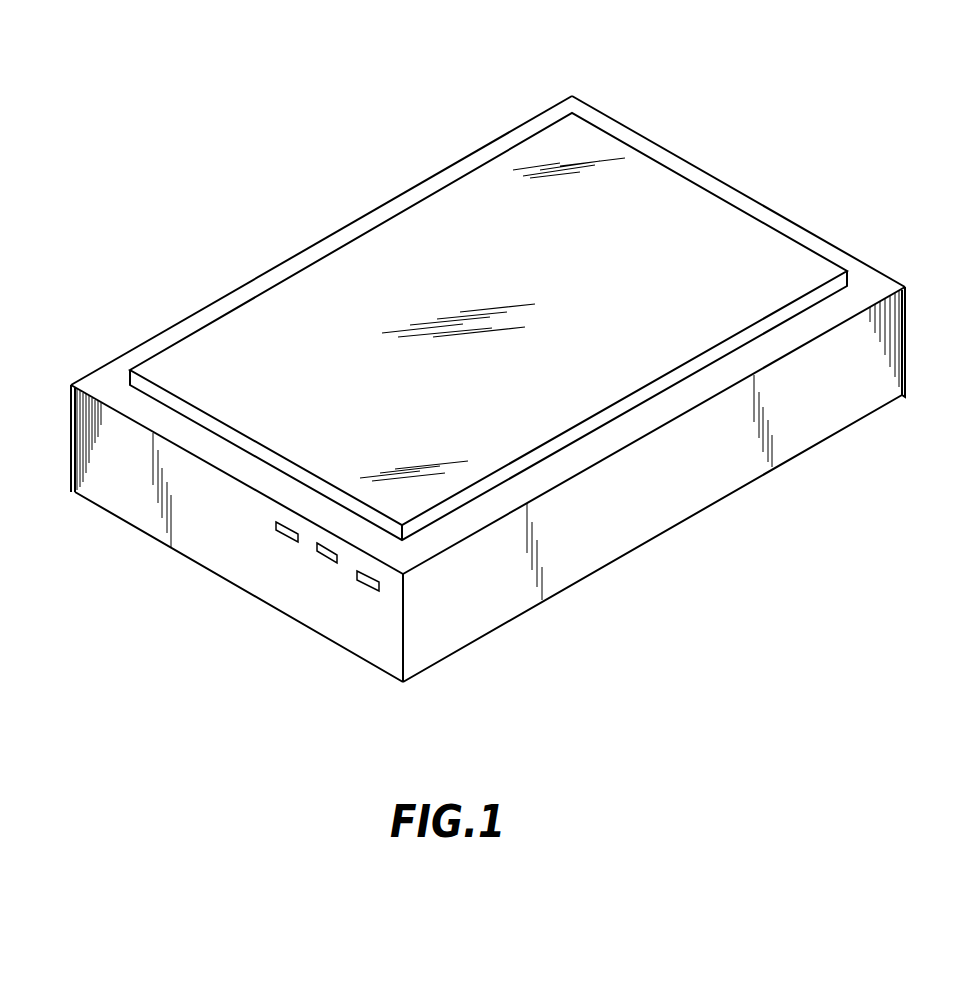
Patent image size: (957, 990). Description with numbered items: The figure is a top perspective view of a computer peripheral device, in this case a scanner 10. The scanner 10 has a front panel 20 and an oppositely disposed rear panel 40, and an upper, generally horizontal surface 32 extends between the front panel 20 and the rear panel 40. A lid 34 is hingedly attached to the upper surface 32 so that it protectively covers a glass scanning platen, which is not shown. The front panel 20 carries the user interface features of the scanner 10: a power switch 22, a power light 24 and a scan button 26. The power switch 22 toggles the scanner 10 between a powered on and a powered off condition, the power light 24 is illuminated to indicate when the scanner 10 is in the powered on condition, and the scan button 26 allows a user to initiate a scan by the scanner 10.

The scanner 10 is at (272, 68).
The front panel 20 is at (120, 468).
The power switch 22 is at (365, 587).
The power light 24 is at (326, 562).
The scan button 26 is at (287, 539).
The upper surface 32 is at (208, 315).
The lid 34 is at (360, 270).
The rear panel 40 is at (740, 193).